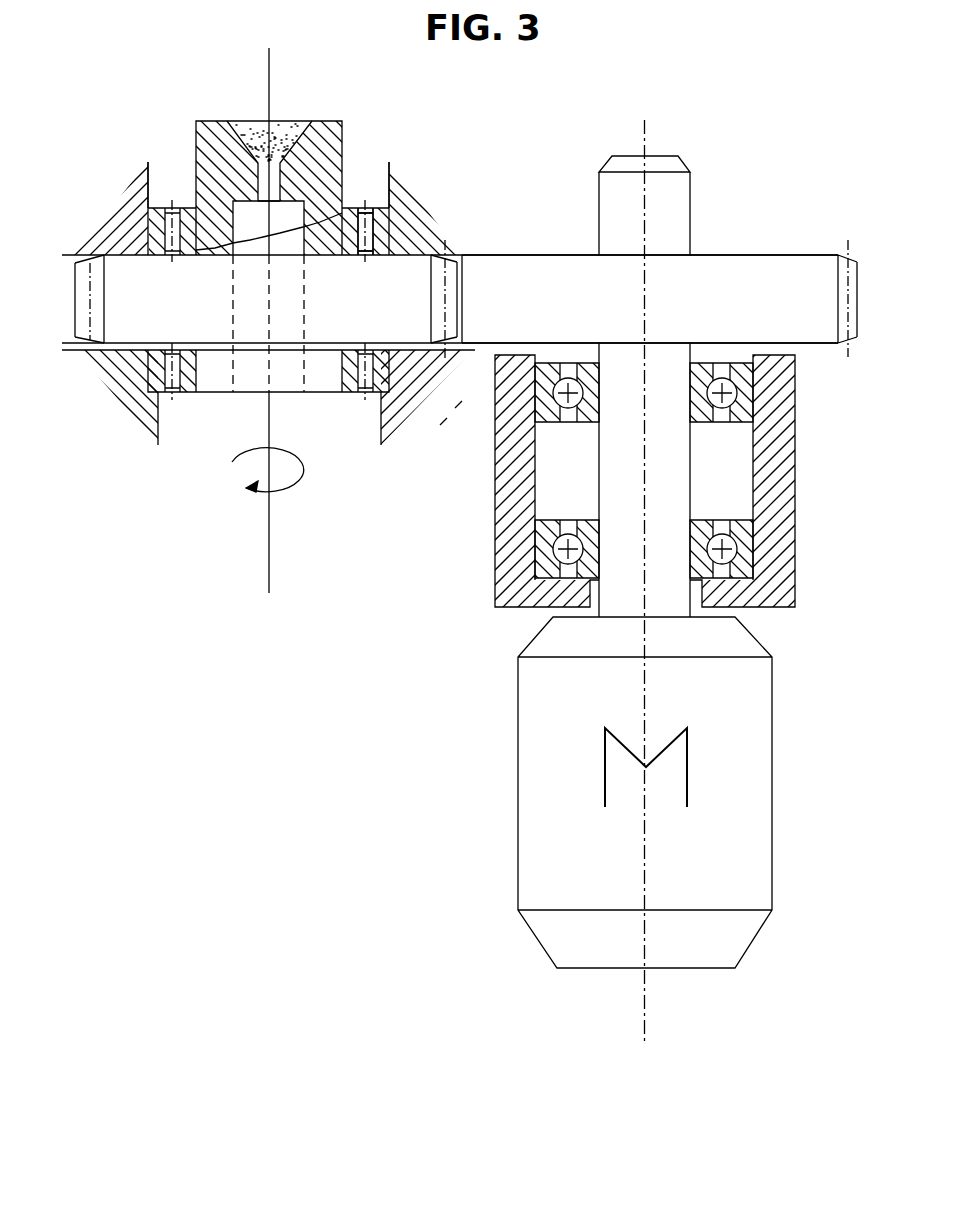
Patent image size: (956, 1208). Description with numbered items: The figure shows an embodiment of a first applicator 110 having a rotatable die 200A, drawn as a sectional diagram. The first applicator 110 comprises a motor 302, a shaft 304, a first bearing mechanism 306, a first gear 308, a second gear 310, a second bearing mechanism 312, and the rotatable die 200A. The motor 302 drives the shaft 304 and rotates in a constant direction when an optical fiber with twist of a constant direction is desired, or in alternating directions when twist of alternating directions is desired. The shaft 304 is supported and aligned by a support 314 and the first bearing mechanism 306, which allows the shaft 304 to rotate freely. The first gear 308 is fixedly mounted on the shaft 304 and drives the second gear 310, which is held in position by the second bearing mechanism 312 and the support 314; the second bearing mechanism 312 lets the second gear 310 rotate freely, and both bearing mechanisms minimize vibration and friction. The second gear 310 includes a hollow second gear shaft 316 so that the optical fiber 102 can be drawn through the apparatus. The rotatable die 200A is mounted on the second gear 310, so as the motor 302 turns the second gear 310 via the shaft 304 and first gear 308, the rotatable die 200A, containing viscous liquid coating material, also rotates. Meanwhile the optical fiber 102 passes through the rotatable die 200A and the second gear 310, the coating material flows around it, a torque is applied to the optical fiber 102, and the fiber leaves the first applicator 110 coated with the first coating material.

The optical fiber 102 is at (270, 526).
The first applicator 110 is at (703, 118).
The rotatable die 200A is at (297, 120).
The motor 302 is at (523, 765).
The shaft 304 is at (690, 218).
The first bearing mechanism 306 is at (743, 473).
The first gear 308 is at (803, 263).
The second gear 310 is at (117, 268).
The second bearing mechanism 312 is at (367, 206).
The support 314 is at (132, 405).
The second gear shaft 316 is at (208, 178).